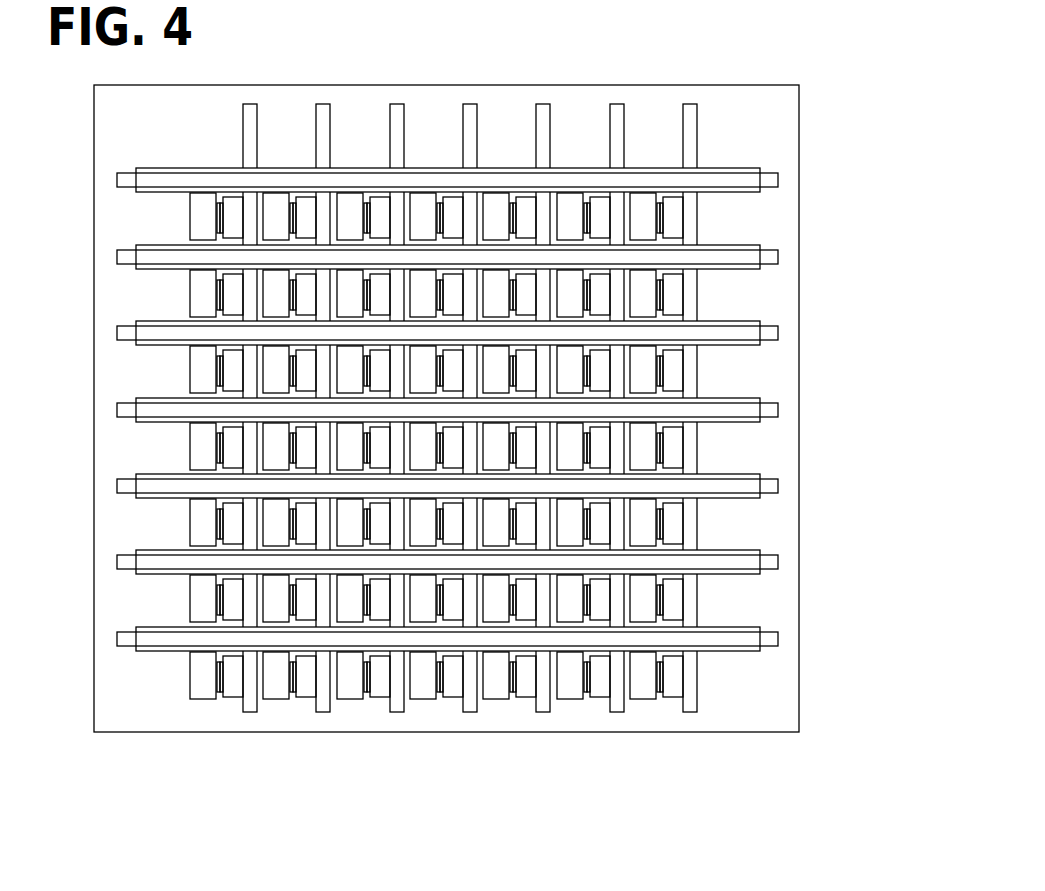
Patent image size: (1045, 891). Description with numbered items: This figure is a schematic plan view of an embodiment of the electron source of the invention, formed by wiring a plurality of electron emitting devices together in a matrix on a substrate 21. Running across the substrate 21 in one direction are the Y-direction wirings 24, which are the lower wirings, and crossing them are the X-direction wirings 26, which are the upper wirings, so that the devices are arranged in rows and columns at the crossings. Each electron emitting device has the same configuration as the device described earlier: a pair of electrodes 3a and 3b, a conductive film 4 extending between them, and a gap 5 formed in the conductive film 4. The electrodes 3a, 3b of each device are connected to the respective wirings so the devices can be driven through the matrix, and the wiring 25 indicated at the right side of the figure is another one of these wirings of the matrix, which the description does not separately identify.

The substrate 21 is at (791, 702).
The data line 24 is at (689, 443).
The scanning line 25 is at (720, 320).
The power supply line 26 is at (775, 181).
The source electrode 3a is at (633, 697).
The drain electrode 3b is at (672, 695).
The gate electrode 4 is at (658, 692).
The semiconductor layer 5 is at (587, 692).